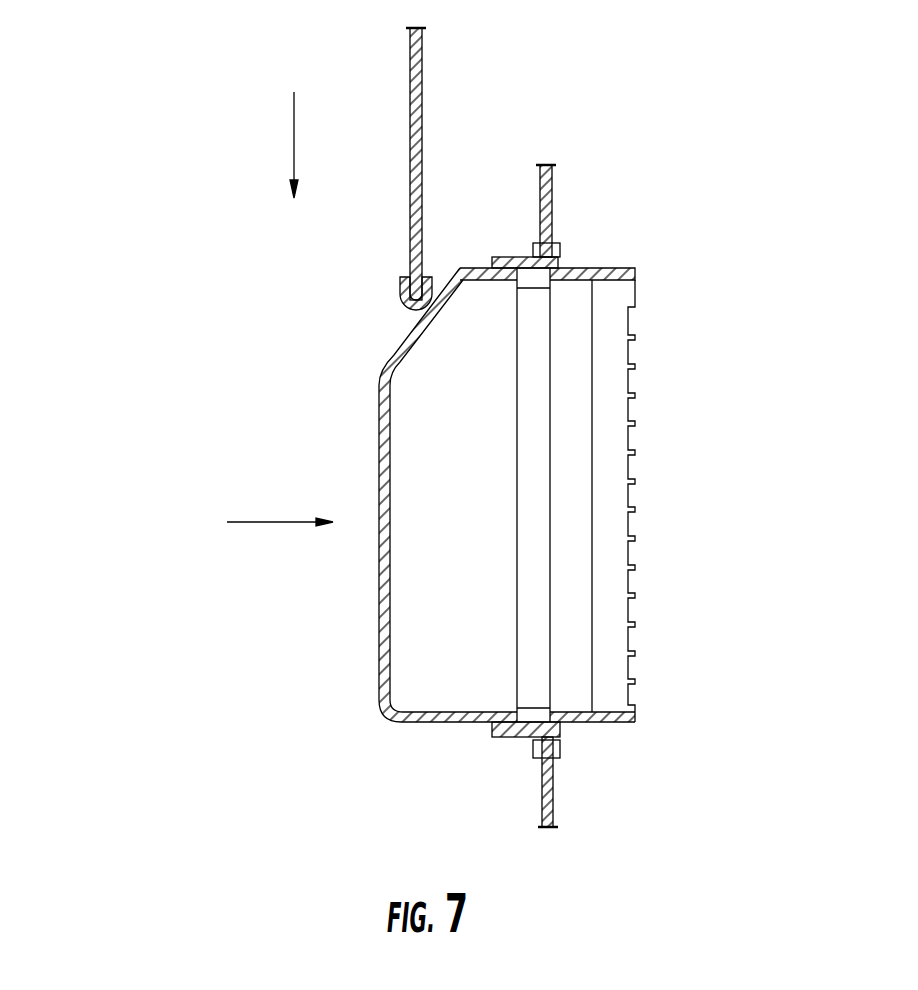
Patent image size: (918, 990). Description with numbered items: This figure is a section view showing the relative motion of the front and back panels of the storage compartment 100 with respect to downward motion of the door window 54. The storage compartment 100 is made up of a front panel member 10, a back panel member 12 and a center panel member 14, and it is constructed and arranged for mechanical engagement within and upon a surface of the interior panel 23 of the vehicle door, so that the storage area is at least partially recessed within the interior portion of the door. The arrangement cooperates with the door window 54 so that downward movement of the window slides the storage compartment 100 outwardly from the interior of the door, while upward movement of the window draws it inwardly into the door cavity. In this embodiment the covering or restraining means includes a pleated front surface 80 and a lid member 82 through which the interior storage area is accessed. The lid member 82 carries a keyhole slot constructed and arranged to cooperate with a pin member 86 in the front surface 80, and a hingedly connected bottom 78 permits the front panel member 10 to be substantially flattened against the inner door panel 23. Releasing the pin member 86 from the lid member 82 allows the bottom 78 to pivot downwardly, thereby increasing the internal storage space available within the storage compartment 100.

The storage compartment 100 is at (706, 277).
The door window 54 is at (422, 72).
The center panel member 14 is at (430, 721).
The lid member 82 is at (582, 270).
The hingedly connected bottom 78 is at (637, 716).
The pleated front surface 80 is at (635, 532).
The pin member 86 is at (635, 412).
The front panel member 10 is at (622, 723).
The back panel member 12 is at (512, 737).
The interior panel 23 is at (552, 188).